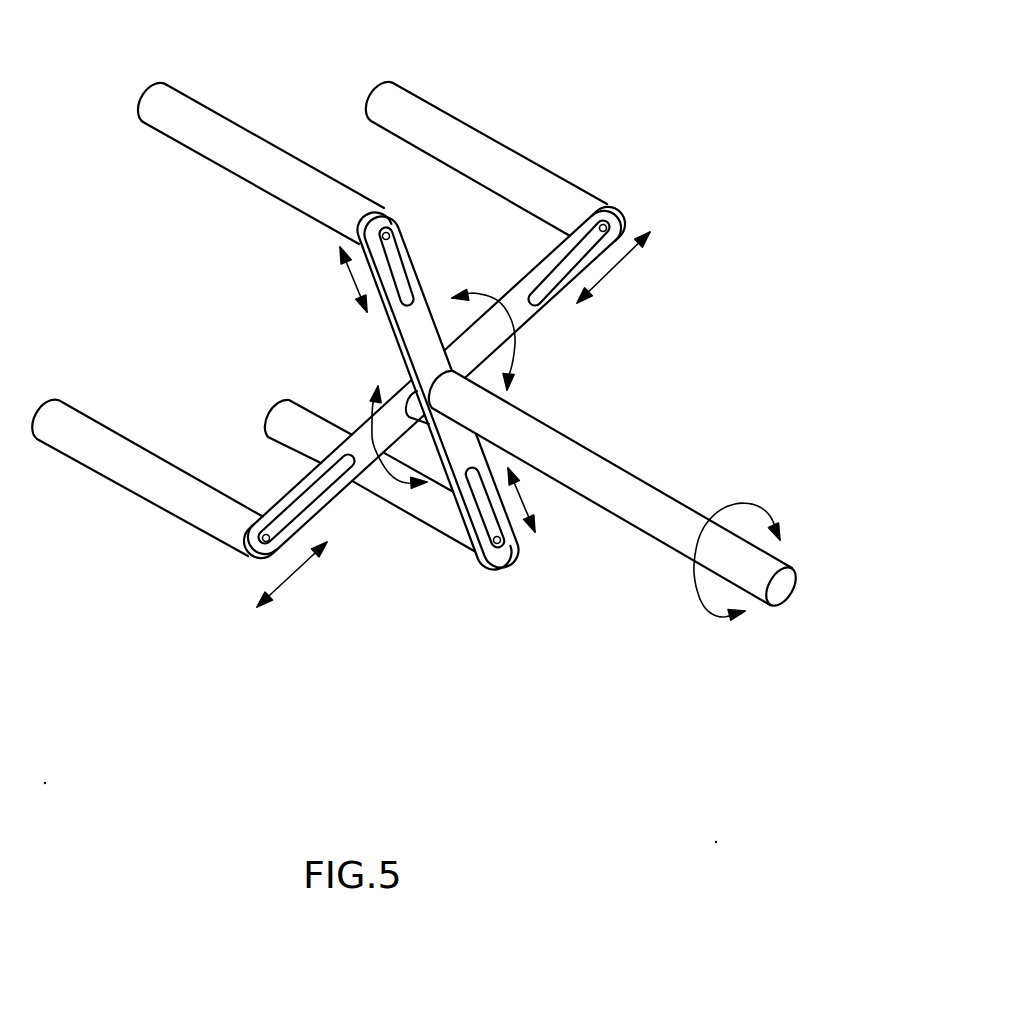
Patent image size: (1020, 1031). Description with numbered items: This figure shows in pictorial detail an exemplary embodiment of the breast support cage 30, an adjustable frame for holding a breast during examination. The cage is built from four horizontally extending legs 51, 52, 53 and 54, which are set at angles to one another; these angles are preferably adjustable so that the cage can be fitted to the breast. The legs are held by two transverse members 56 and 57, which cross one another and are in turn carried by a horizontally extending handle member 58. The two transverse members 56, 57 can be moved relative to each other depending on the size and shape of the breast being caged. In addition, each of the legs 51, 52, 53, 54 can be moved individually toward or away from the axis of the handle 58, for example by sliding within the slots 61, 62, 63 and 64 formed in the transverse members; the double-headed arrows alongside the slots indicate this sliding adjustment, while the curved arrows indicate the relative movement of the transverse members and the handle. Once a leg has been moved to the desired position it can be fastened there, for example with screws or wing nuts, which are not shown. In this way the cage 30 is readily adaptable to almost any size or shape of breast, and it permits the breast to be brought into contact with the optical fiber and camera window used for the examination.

The breast support cage 30 is at (628, 110).
The horizontally extending leg 51 is at (419, 110).
The horizontally extending leg 52 is at (213, 123).
The horizontally extending leg 53 is at (103, 435).
The horizontally extending leg 54 is at (297, 410).
The transverse member 56 is at (453, 419).
The transverse member 57 is at (467, 393).
The handle member 58 is at (612, 465).
The slot 61 is at (618, 238).
The slot 62 is at (402, 263).
The slot 63 is at (328, 492).
The slot 64 is at (500, 523).